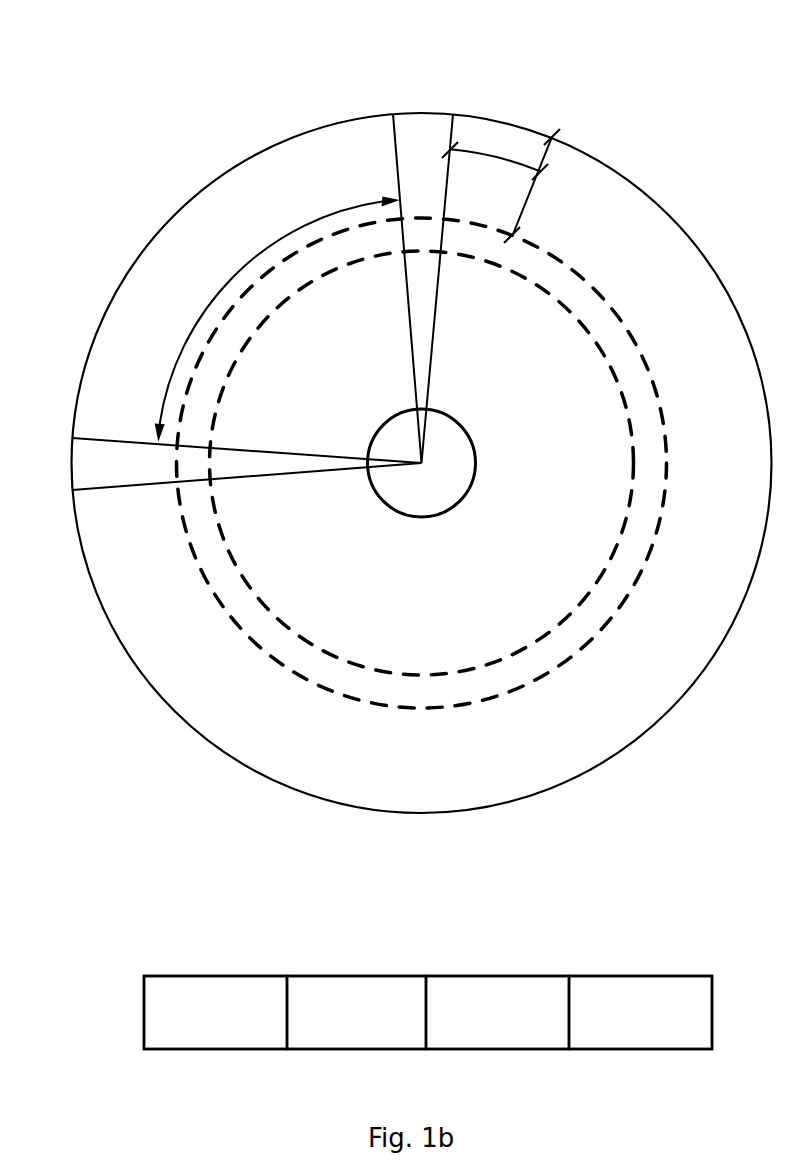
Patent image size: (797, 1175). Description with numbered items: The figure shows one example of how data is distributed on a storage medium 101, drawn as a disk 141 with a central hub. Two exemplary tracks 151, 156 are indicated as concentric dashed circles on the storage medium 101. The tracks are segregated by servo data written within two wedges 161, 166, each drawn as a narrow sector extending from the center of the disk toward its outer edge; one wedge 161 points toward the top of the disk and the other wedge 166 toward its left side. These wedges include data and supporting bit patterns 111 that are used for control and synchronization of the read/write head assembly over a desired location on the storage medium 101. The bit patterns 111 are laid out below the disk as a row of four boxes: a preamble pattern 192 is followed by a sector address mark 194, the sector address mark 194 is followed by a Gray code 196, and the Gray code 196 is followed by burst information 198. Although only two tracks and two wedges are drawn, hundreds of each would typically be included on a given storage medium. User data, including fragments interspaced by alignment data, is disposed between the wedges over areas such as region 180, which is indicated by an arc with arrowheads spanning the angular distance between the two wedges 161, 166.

The storage medium 101 is at (78, 62).
The disk 141 is at (662, 207).
The track 151 is at (583, 274).
The track 156 is at (592, 336).
The wedge 161 is at (424, 117).
The wedge 166 is at (77, 467).
The region 180 is at (173, 353).
The data and supporting bit patterns 111 is at (557, 938).
The preamble pattern 192 is at (215, 1012).
The sector address mark 194 is at (356, 1012).
The Gray code 196 is at (497, 1012).
The burst information 198 is at (640, 1012).